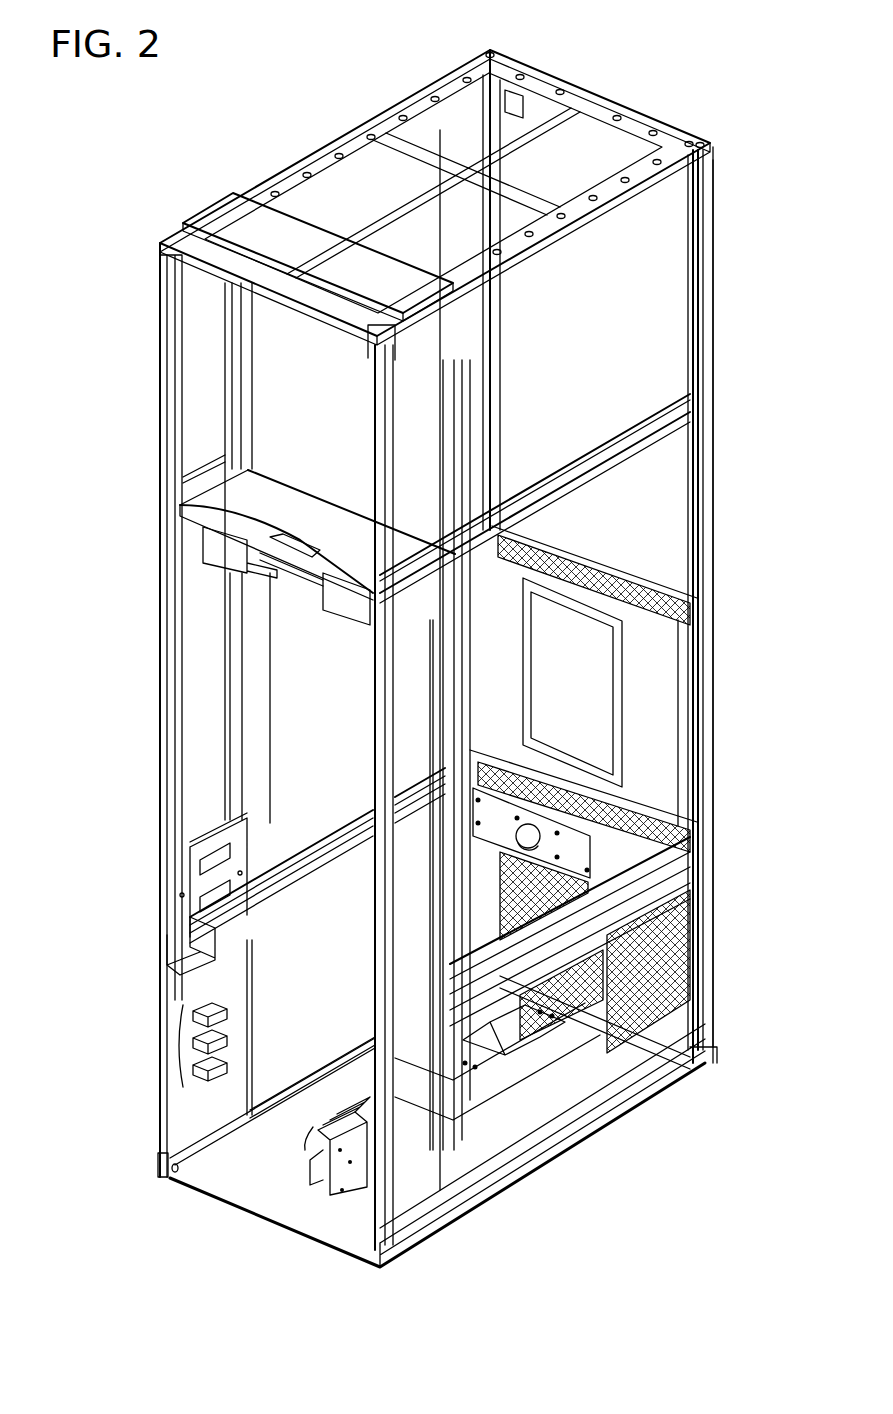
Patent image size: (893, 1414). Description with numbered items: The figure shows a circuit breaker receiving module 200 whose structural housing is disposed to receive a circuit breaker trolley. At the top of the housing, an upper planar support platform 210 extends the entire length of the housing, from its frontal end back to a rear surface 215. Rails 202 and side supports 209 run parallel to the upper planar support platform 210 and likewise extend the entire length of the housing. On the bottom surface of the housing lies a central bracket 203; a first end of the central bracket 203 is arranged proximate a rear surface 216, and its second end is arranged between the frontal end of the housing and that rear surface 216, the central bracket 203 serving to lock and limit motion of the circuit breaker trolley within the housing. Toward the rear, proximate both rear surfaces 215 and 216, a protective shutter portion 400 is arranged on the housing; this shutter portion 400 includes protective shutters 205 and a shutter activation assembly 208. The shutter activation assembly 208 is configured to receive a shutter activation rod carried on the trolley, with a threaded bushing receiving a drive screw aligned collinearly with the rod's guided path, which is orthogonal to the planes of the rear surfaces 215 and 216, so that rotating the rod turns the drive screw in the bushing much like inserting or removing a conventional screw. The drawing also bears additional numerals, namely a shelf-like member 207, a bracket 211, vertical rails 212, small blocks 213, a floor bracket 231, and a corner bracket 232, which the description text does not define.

The circuit breaker receiving module 200 is at (655, 47).
The upper planar support platform 210 is at (362, 180).
The rear surface 215 is at (598, 385).
The side supports 209 is at (612, 470).
The shelf 207 is at (192, 502).
The protective shutters 205 is at (598, 697).
The protective shutter portion 400 is at (707, 603).
The mounting bracket 211 is at (190, 847).
The shutter activation assembly 208 is at (542, 841).
The rails 202 is at (645, 893).
The rear surface 216 is at (670, 983).
The vertical mounting rail 212 is at (233, 973).
The connector blocks 213 is at (180, 1047).
The floor bracket 231 is at (522, 1022).
The central bracket 203 is at (520, 1067).
The corner bracket 232 is at (315, 1120).